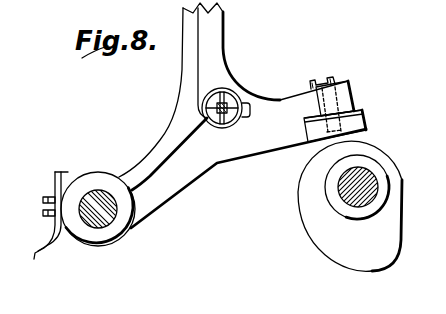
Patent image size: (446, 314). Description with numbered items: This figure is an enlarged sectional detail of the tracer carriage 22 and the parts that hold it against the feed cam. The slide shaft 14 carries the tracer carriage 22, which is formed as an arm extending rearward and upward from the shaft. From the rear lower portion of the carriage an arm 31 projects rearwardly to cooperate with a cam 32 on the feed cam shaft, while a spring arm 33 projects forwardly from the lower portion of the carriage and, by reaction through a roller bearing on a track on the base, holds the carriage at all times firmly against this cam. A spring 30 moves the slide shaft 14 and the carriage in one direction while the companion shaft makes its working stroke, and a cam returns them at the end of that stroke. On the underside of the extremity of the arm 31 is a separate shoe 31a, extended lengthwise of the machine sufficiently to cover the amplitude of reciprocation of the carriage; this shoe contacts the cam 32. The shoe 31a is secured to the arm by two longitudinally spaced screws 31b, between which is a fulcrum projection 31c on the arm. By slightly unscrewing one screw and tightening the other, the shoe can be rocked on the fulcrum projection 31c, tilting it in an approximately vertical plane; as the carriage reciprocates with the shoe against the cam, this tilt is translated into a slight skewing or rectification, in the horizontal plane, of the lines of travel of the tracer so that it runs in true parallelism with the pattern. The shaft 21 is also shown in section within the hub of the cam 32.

The tracer carriage 22 is at (219, 29).
The spring 30 is at (213, 126).
The arm 31 is at (280, 105).
The shoe 31a is at (360, 120).
The screws 31b is at (332, 80).
The fulcrum projection 31c is at (359, 110).
The cam 32 is at (352, 255).
The shaft 21 is at (340, 194).
The slide shaft 14 is at (96, 218).
The spring arm 33 is at (34, 258).